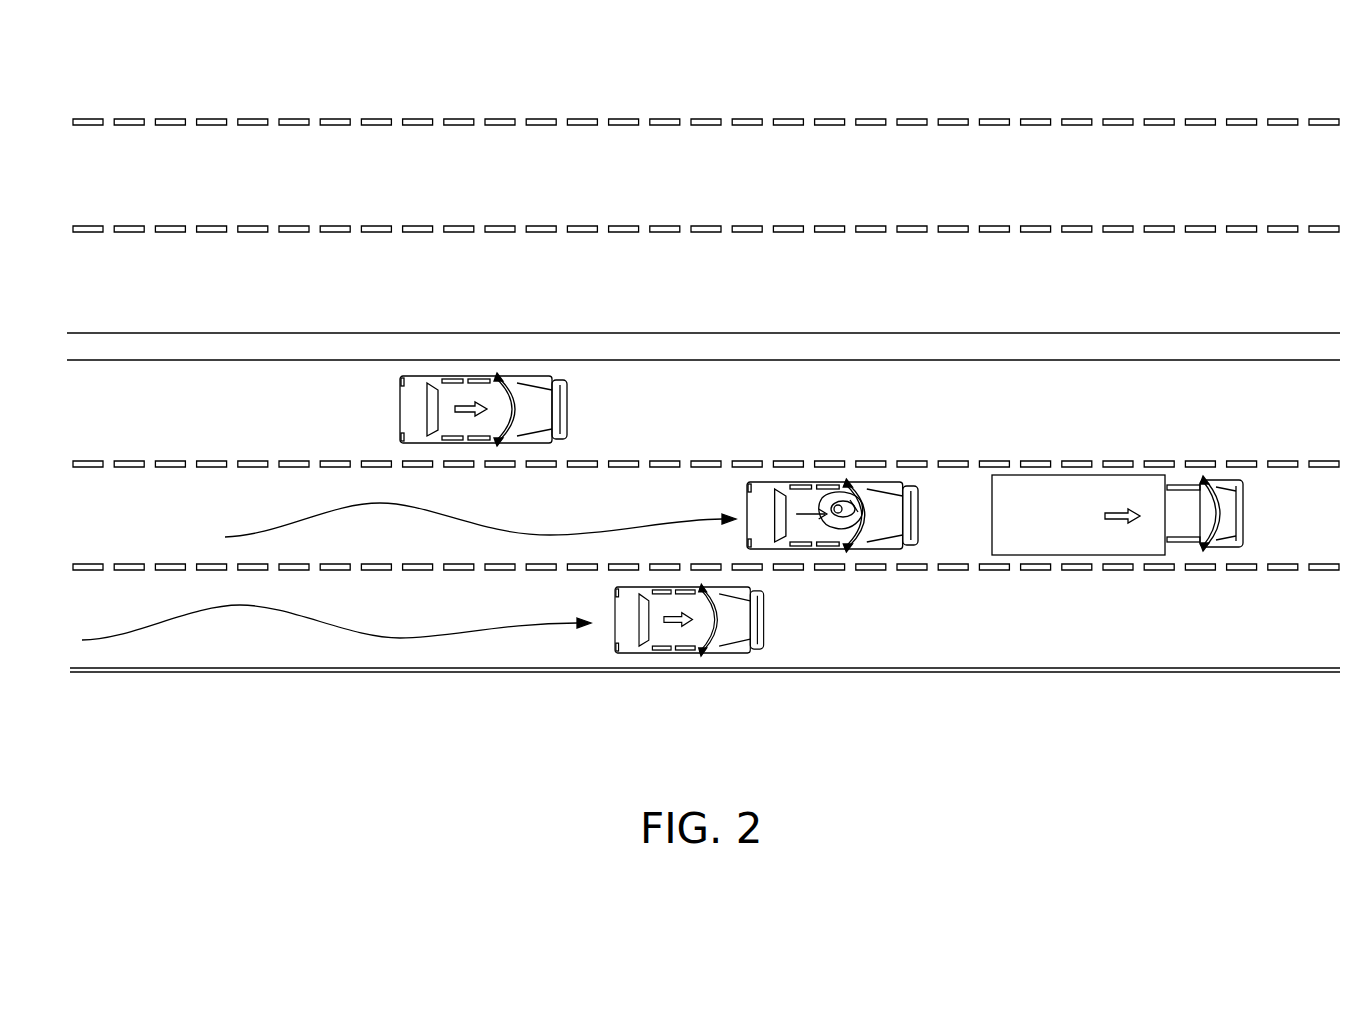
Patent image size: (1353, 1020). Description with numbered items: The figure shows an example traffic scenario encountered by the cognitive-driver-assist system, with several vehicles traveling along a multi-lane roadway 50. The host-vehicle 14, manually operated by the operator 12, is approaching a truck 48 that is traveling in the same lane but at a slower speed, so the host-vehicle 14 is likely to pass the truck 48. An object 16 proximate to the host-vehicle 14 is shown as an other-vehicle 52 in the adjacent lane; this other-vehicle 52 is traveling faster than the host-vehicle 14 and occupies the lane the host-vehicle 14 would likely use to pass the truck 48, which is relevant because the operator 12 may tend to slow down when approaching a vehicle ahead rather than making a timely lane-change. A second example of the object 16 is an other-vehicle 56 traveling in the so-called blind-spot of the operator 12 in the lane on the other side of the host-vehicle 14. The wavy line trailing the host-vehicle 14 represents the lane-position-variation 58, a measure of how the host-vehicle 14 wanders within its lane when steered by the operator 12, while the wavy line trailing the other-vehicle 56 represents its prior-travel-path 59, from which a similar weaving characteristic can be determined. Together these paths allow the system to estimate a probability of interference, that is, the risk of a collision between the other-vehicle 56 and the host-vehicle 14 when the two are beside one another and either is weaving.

The operator 12 is at (847, 498).
The host-vehicle 14 is at (786, 486).
The object 16 is at (430, 378).
The truck 48 is at (1127, 485).
The roadway 50 is at (232, 663).
The other-vehicle 52 is at (500, 378).
The other-vehicle 56 is at (690, 653).
The lane-position-variation 58 is at (375, 503).
The prior-travel-path 59 is at (413, 638).